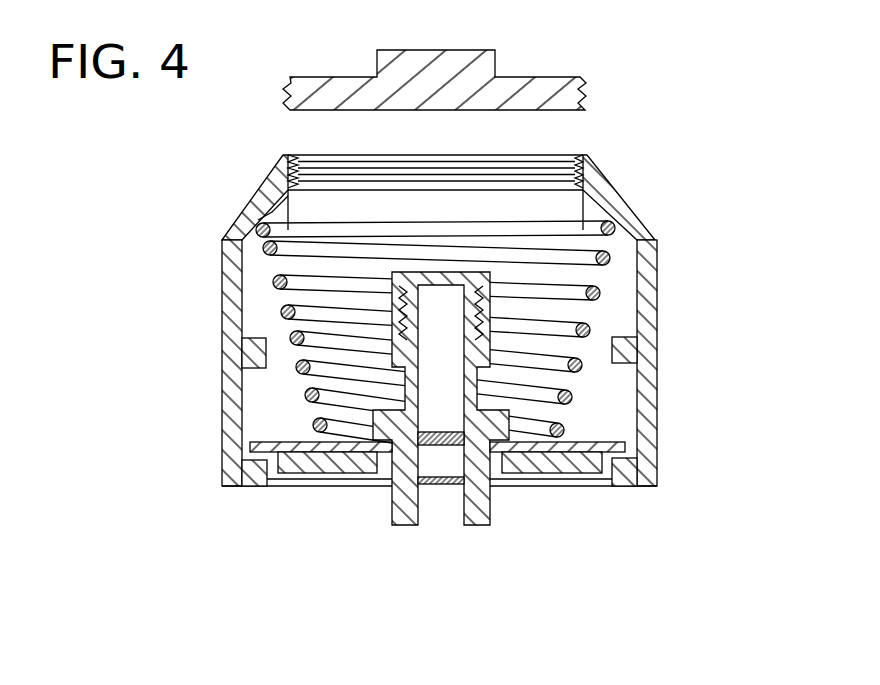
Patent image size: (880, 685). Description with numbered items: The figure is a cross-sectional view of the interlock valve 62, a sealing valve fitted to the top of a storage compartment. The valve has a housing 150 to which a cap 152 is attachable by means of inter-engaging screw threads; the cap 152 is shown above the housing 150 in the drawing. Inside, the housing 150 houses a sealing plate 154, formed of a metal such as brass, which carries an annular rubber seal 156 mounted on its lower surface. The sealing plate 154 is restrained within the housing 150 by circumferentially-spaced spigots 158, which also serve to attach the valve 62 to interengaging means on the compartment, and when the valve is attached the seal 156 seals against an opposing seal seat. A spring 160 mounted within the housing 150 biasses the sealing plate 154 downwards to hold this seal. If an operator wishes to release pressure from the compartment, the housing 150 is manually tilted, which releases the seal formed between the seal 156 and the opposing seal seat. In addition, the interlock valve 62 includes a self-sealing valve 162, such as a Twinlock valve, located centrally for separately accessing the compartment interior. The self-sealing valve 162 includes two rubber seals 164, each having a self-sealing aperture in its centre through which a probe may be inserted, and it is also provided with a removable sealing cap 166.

The interlock valve 62 is at (668, 131).
The housing 150 is at (652, 312).
The cap 152 is at (540, 82).
The sealing plate 154 is at (580, 473).
The annular rubber seal 156 is at (528, 466).
The spigots 158 is at (247, 353).
The spring 160 is at (572, 292).
The self-sealing valve 162 is at (392, 497).
The rubber seals 164 is at (449, 445).
The removable sealing cap 166 is at (258, 226).